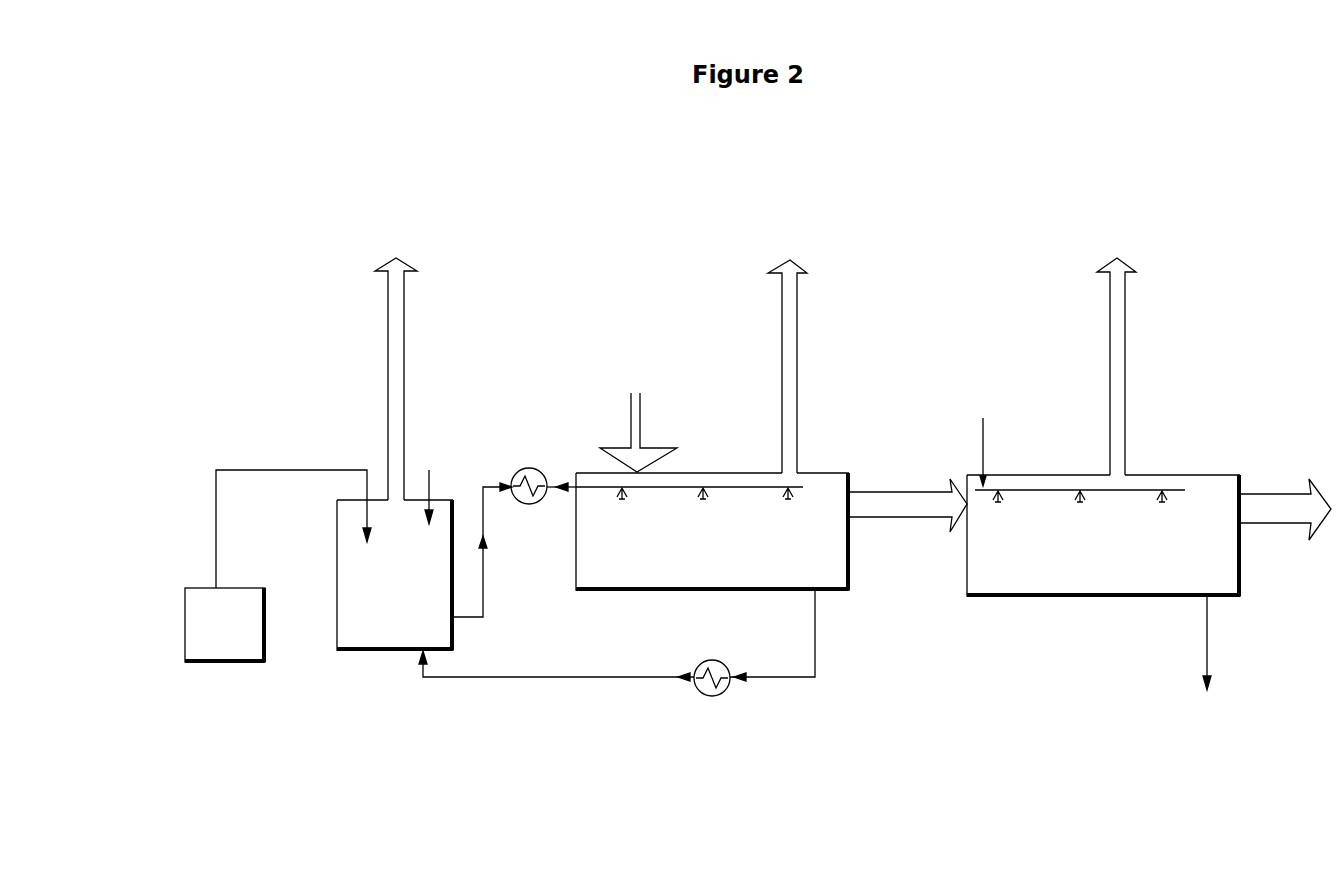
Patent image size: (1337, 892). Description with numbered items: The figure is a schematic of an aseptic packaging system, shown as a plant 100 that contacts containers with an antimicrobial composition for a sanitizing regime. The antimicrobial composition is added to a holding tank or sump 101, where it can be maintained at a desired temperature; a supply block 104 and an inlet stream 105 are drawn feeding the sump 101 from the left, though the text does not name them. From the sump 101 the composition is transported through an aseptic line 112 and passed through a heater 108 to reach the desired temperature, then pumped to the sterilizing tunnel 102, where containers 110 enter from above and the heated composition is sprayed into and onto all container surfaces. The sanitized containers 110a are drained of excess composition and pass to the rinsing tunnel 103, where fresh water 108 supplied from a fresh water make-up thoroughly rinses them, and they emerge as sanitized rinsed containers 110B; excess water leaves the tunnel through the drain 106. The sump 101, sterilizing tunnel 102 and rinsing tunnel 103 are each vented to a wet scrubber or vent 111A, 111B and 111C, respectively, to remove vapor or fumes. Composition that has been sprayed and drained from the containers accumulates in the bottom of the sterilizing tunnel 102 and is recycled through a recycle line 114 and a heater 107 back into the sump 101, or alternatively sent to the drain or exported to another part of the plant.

The plant 100 is at (343, 772).
The sump 101 is at (360, 653).
The sterilizing tunnel 102 is at (833, 585).
The rinsing tunnel 103 is at (1228, 586).
The feed source 104 is at (232, 667).
The inlet stream 105 is at (431, 484).
The drain 106 is at (1207, 647).
The heater 107 is at (721, 691).
The heater 108 is at (536, 467).
The containers 110 is at (638, 419).
The sanitized containers 110a is at (891, 490).
The sanitized rinsed containers 110B is at (1285, 509).
The wet scrubber or vent 111A is at (393, 366).
The wet scrubber or vent 111B is at (786, 355).
The wet scrubber or vent 111C is at (1119, 355).
The aseptic line 112 is at (482, 582).
The recycle line 114 is at (818, 657).